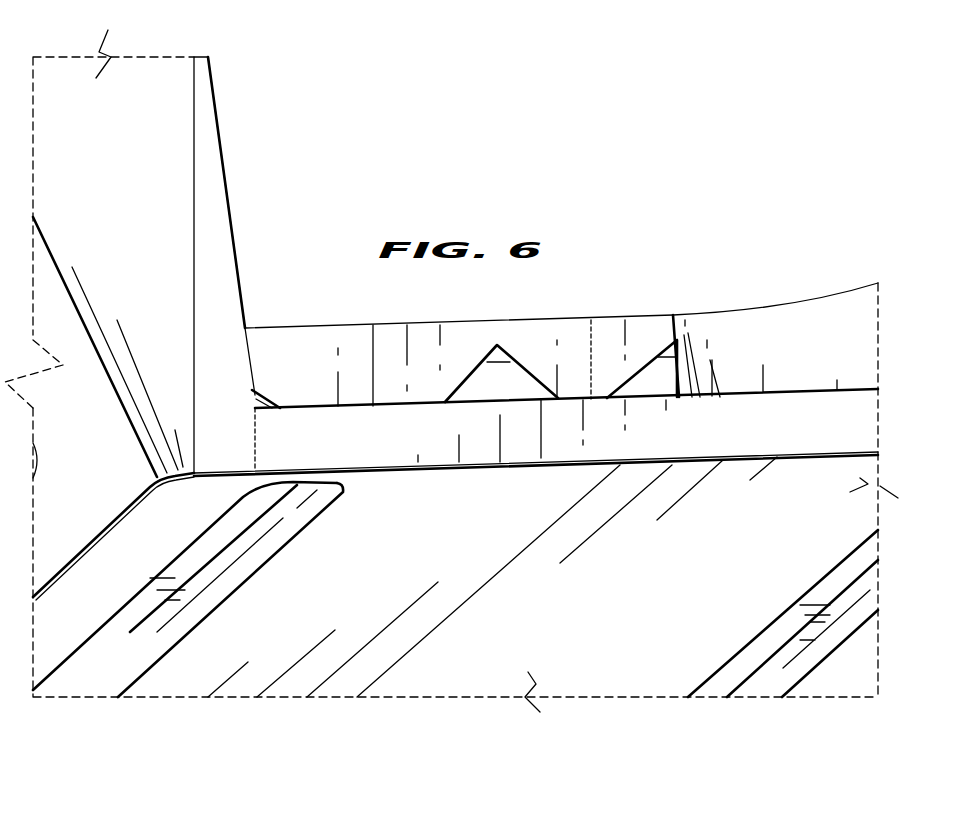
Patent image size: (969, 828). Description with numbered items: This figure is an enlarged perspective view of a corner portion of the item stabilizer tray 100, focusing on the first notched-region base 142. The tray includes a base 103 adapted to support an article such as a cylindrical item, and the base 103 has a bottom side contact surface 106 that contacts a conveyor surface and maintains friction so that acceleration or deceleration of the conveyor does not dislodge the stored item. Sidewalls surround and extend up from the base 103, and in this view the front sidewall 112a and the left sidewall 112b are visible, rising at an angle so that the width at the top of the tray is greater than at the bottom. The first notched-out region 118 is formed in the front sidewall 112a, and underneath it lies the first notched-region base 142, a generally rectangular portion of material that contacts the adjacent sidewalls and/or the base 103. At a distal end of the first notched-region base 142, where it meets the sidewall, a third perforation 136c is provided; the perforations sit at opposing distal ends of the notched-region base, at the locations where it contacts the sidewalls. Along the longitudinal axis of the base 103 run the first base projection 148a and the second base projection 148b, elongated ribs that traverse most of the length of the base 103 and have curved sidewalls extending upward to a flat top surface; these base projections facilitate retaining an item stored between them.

The item stabilizer tray 100 is at (852, 680).
The base 103 is at (200, 673).
The bottom side contact surface 106 is at (536, 576).
The front sidewall 112a is at (213, 222).
The left sidewall 112b is at (113, 408).
The first notched-out region 118 is at (561, 344).
The third perforation 136c is at (256, 433).
The first notched-region base 142 is at (566, 425).
The first base projection 148a is at (768, 630).
The second base projection 148b is at (287, 540).